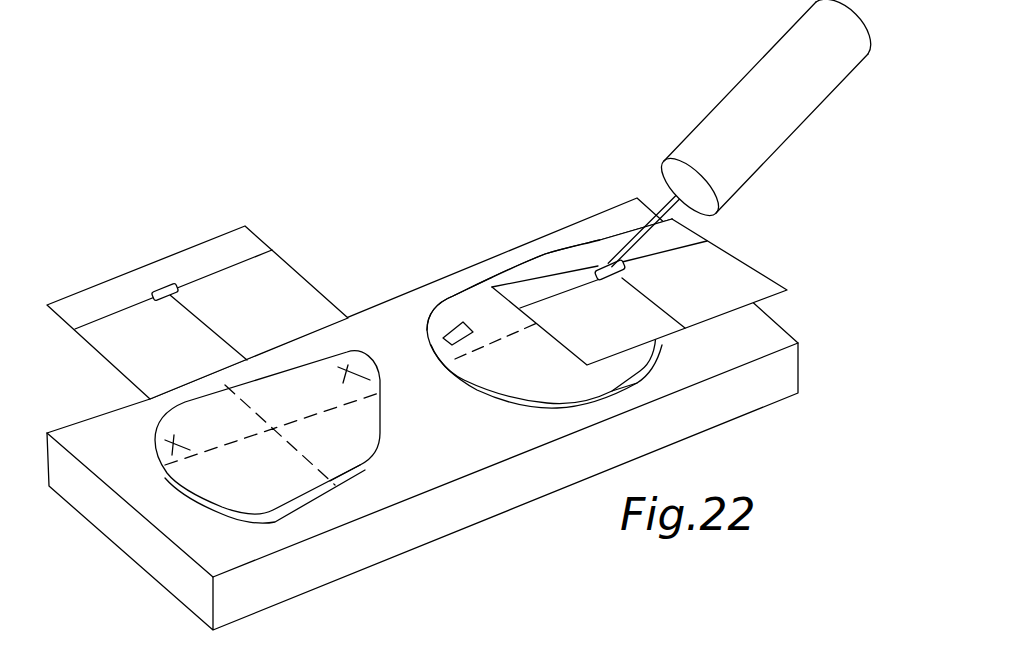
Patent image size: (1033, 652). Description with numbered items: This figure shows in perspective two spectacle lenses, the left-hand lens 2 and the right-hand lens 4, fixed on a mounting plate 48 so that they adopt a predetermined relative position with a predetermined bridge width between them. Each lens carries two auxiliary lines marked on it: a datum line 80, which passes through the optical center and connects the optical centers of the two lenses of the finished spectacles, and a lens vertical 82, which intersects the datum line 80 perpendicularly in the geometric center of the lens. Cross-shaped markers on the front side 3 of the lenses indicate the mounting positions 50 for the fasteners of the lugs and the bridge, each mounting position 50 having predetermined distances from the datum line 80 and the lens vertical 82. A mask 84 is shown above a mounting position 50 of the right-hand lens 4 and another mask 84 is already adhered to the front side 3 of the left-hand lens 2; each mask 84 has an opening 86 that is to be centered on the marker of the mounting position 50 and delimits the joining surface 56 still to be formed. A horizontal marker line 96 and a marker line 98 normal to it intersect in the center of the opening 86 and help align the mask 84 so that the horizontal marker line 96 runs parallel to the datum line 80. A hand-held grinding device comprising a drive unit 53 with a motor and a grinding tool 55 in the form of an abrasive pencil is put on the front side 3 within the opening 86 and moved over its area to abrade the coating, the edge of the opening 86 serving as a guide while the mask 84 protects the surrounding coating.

The left-hand lens 2 is at (565, 374).
The front side 3 is at (344, 437).
The right-hand lens 4 is at (341, 452).
The mounting plate 48 is at (507, 502).
The mounting position 50 is at (160, 450).
The drive unit 53 is at (782, 131).
The grinding tool 55 is at (660, 230).
The joining surface 56 is at (440, 333).
The datum line 80 is at (212, 480).
The lens vertical 82 is at (326, 484).
The mask 84 is at (105, 342).
The opening 86 is at (170, 288).
The horizontal marker line 96 is at (268, 262).
The marker line 98 is at (160, 290).